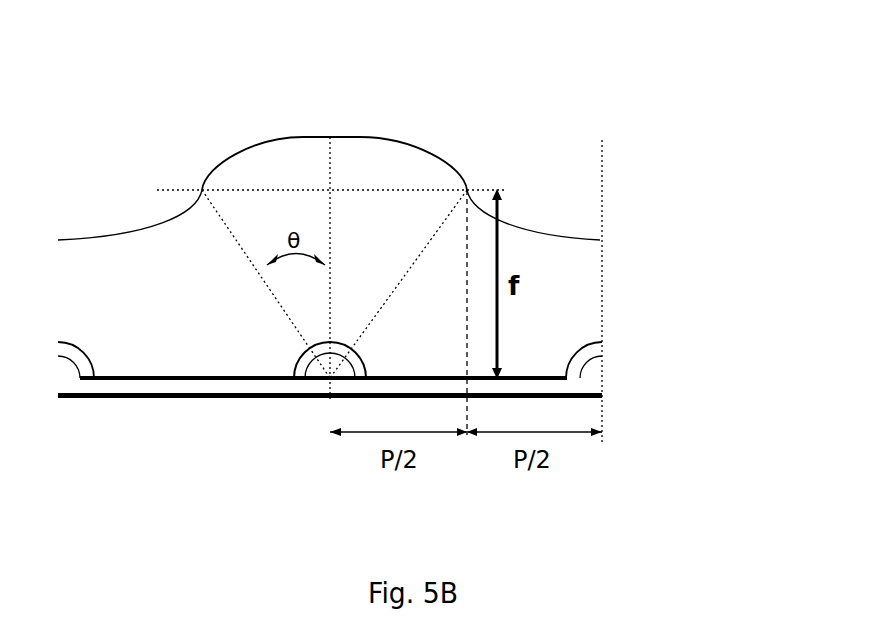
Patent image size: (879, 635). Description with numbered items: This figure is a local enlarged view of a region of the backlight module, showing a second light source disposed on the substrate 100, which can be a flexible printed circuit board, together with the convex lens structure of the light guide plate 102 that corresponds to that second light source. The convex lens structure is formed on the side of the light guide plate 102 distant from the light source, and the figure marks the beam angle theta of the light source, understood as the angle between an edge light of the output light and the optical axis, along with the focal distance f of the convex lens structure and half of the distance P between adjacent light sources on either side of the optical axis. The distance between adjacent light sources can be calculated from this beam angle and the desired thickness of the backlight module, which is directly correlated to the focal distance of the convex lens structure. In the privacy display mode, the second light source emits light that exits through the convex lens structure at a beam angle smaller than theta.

The substrate 100 is at (115, 383).
The light guide plate 102 is at (580, 297).